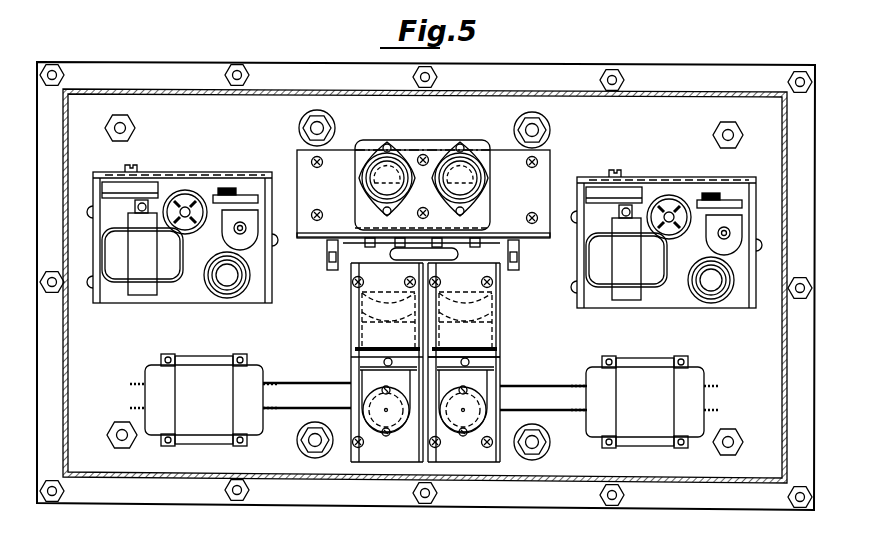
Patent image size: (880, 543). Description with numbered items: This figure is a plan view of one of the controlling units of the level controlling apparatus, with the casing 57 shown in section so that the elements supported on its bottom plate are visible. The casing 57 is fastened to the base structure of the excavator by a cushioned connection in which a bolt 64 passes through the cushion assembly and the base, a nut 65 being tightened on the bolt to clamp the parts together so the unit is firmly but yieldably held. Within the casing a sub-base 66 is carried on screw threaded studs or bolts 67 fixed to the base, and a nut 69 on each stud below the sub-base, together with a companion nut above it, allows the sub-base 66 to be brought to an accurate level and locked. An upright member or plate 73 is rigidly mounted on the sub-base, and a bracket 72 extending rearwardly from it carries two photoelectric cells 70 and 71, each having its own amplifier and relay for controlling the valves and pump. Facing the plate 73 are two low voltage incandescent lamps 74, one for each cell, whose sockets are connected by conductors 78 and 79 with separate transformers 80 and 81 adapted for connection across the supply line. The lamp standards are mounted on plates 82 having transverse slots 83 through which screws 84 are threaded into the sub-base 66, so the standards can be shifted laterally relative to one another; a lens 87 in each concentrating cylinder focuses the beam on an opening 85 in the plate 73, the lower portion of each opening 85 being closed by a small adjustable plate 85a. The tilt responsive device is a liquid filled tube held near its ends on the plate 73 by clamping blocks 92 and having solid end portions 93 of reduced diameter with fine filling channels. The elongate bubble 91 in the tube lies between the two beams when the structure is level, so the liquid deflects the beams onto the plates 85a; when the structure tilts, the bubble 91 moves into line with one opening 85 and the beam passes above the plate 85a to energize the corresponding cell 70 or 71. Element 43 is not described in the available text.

The terminal screw 43 is at (352, 283).
The casing 57 is at (168, 478).
The bolt 64 is at (127, 126).
The nut 65 is at (132, 137).
The sub-base 66 is at (546, 372).
The screw threaded studs or bolts 67 is at (300, 120).
The nut 69 is at (302, 132).
The photoelectric cell 70 is at (392, 166).
The photoelectric cell 71 is at (468, 166).
The bracket 72 is at (485, 200).
The upright member or plate 73 is at (310, 243).
The low voltage incandescent lamp 74 is at (373, 431).
The conductor 78 is at (572, 400).
The conductor 79 is at (322, 400).
The transformer 80 is at (648, 432).
The transformer 81 is at (208, 424).
The plate 82 is at (352, 311).
The transverse slot 83 is at (438, 276).
The screw 84 is at (492, 284).
The opening 85 is at (385, 232).
The plate 85a is at (498, 228).
The lens 87 is at (362, 296).
The bubble 91 is at (405, 258).
The clamping block 92 is at (326, 262).
The solid portion 93 is at (443, 357).